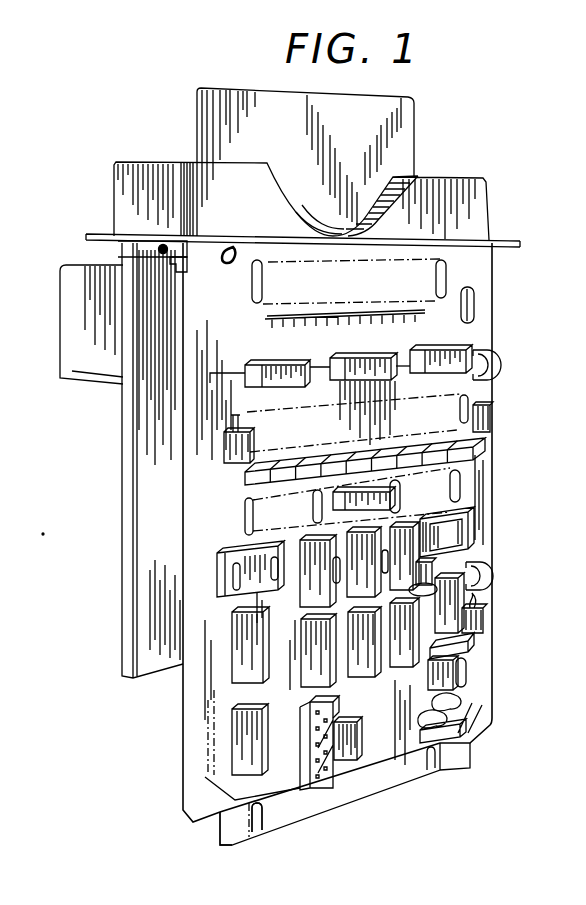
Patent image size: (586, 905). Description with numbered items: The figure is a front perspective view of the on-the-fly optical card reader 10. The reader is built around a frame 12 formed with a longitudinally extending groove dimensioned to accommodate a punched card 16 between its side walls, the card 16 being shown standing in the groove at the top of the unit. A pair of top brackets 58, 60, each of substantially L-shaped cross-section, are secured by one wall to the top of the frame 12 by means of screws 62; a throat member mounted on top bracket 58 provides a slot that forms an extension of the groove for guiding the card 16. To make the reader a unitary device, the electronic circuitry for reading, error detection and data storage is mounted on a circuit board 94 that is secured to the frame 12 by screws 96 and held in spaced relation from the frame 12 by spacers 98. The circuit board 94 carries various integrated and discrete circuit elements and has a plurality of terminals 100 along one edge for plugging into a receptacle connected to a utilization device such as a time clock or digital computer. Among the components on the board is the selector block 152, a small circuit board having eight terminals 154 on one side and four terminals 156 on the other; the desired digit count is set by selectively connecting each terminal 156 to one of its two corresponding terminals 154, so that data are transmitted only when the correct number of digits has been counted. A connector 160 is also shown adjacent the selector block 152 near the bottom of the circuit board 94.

The on-the-fly optical card reader 10 is at (504, 210).
The frame 12 is at (145, 668).
The punched card 16 is at (404, 118).
The top bracket 58 is at (86, 234).
The top bracket 60 is at (521, 247).
The screws 62 is at (160, 243).
The circuit board 94 is at (486, 473).
The screws 96 is at (233, 246).
The spacers 98 is at (187, 276).
The terminals 100 is at (238, 838).
The selector block 152 is at (300, 710).
The terminals 154 is at (333, 713).
The terminals 156 is at (356, 733).
The edge connector 160 is at (313, 735).